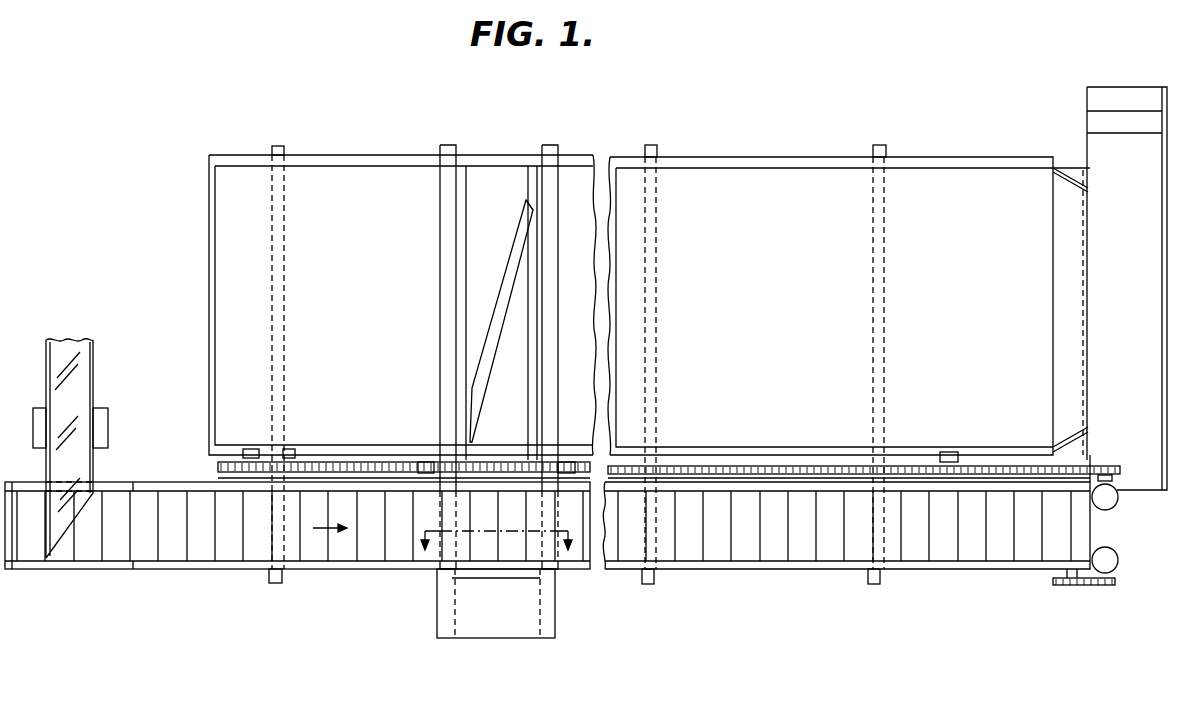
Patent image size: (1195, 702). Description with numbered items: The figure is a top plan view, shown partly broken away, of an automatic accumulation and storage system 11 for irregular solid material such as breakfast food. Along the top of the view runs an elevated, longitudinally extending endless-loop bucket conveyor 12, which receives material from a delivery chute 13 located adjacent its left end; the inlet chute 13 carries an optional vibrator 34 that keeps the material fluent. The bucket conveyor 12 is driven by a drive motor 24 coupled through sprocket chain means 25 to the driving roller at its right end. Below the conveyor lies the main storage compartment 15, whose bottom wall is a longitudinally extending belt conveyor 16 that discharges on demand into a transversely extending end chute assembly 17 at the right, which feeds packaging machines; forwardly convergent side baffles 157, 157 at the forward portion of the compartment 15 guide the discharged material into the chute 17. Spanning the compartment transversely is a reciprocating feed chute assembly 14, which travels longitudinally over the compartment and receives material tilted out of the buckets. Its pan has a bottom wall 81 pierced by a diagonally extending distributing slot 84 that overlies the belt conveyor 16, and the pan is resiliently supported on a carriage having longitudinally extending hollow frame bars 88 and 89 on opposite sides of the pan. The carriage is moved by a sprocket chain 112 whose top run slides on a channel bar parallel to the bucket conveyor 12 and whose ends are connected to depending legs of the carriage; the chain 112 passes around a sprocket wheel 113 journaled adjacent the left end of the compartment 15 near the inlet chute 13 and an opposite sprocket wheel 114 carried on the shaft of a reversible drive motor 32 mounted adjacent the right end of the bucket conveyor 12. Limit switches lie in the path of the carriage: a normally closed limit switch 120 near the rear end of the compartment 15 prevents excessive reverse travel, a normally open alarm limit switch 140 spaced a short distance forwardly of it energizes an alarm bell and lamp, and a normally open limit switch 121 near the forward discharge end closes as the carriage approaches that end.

The automatic storage or accumulation system 11 is at (172, 183).
The bucket conveyor 12 is at (182, 571).
The delivery chute 13 is at (95, 386).
The vibrator 34 is at (108, 432).
The feed chute assembly 14 is at (438, 296).
The main storage compartment 15 is at (686, 158).
The belt conveyor 16 is at (793, 180).
The end chute assembly 17 is at (1167, 492).
The drive motor 24 is at (1118, 571).
The sprocket chain means 25 is at (1083, 590).
The drive motor 32 is at (1105, 505).
The bottom wall 81 is at (512, 396).
The distributing slot 84 is at (512, 270).
The frame bar 88 is at (440, 399).
The frame bar 89 is at (543, 385).
The sprocket chain 112 is at (703, 466).
The sprocket wheel 113 is at (218, 466).
The sprocket wheel 114 is at (1108, 465).
The limit switch 120 is at (250, 449).
The limit switch 121 is at (948, 451).
The alarm limit switch 140 is at (290, 448).
The side baffles 157 is at (1075, 187).